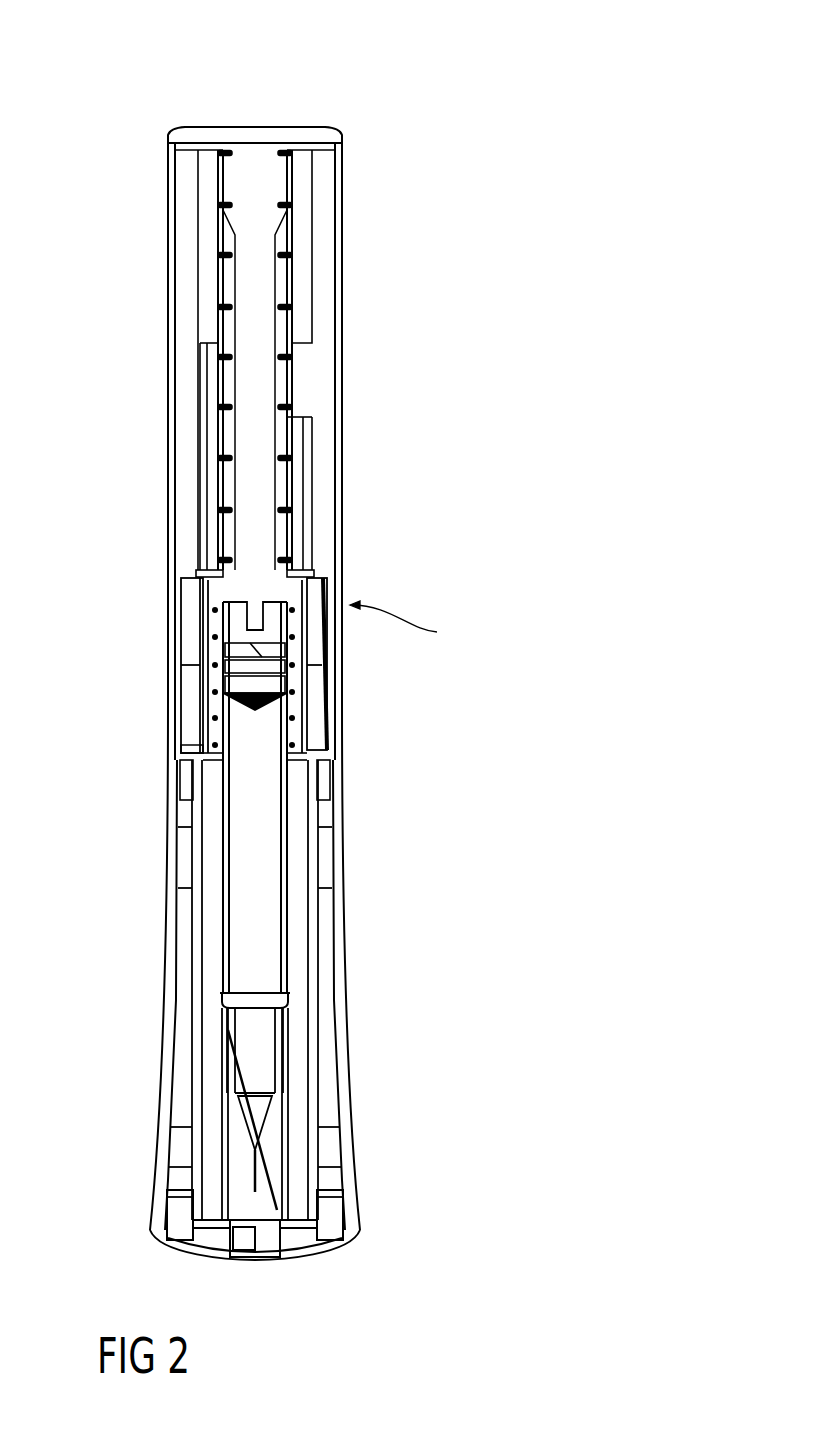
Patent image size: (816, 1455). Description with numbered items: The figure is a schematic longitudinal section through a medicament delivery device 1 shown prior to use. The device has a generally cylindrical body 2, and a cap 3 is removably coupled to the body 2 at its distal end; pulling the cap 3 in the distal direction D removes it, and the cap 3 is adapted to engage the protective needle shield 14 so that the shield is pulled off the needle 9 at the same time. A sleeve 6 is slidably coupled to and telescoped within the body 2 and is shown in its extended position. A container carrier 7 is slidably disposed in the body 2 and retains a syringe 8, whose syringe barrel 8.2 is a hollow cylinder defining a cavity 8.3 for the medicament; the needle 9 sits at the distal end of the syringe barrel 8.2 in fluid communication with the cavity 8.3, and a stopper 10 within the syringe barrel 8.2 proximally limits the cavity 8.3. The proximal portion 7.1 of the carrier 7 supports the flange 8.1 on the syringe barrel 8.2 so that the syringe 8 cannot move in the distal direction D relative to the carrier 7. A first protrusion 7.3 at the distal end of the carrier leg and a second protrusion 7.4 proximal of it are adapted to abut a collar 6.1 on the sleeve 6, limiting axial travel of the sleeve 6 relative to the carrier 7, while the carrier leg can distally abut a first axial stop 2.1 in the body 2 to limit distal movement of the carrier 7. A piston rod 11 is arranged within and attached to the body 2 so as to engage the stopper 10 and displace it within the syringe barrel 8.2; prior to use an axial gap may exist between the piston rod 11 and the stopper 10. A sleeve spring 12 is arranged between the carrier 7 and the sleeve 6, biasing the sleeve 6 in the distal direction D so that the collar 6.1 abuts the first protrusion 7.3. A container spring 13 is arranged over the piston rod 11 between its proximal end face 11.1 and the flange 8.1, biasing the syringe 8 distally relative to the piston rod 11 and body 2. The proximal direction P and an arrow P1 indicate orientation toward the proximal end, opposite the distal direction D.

The medicament delivery device 1 is at (349, 101).
The body 2 is at (342, 217).
The first axial stop 2.1 is at (177, 767).
The cap 3 is at (338, 992).
The sleeve 6 is at (310, 1042).
The collar 6.1 is at (335, 753).
The container carrier 7 is at (313, 573).
The proximal portion 7.1 is at (180, 595).
The first protrusion 7.3 is at (178, 753).
The second protrusion 7.4 is at (333, 675).
The syringe 8 is at (227, 830).
The flange 8.1 is at (202, 572).
The syringe barrel 8.2 is at (227, 830).
The cavity 8.3 is at (267, 885).
The needle 9 is at (248, 1113).
The stopper 10 is at (273, 675).
The piston rod 11 is at (240, 322).
The proximal end face 11.1 is at (185, 140).
The sleeve spring 12 is at (212, 636).
The container spring 13 is at (290, 305).
The protective needle shield 14 is at (265, 1158).
The proximal direction P is at (248, 78).
The proximal direction arrow P1 is at (415, 626).
The distal direction D is at (259, 1287).